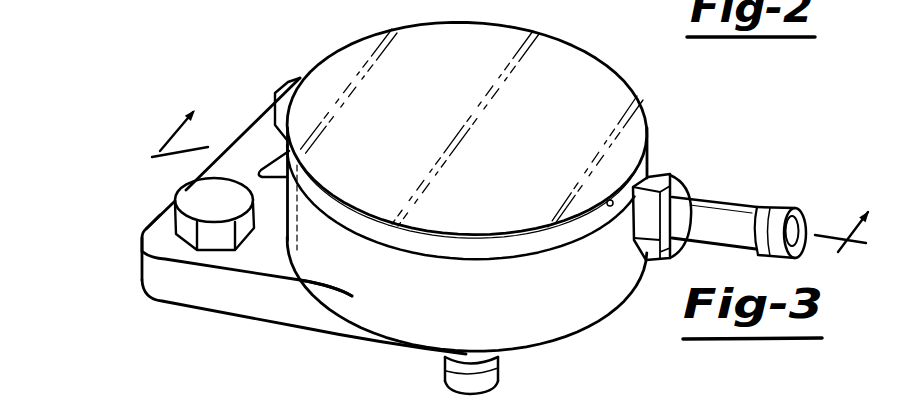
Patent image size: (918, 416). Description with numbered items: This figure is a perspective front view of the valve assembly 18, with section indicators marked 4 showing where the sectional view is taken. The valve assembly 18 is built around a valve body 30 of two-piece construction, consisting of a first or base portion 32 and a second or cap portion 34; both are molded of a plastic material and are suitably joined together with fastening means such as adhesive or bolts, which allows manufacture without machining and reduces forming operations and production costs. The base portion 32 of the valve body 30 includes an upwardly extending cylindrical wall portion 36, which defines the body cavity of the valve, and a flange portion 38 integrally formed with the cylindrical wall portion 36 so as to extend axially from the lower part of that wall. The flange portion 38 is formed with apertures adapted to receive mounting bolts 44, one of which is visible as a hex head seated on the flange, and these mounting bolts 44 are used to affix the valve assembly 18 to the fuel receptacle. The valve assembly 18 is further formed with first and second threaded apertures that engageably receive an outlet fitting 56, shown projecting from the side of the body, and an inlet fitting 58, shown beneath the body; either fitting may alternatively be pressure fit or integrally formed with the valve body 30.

The valve assembly 18 is at (680, 108).
The valve body 30 is at (183, 287).
The base portion 32 is at (157, 232).
The cap portion 34 is at (365, 83).
The cylindrical wall portion 36 is at (333, 258).
The flange portion 38 is at (175, 210).
The mounting bolts 44 is at (183, 230).
The outlet fitting 56 is at (719, 216).
The inlet fitting 58 is at (492, 366).
The section line 4- 4 is at (496, 197).